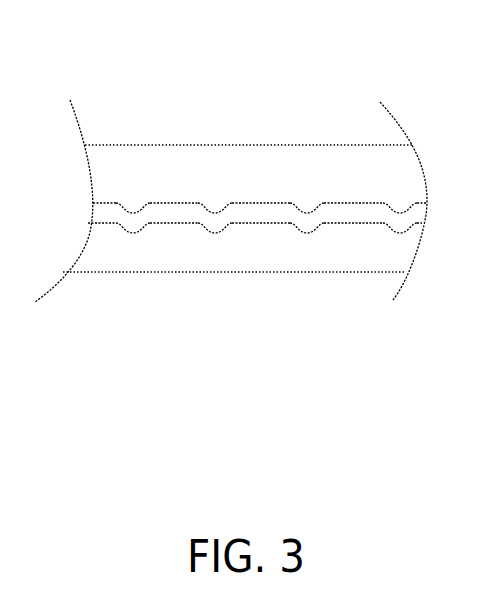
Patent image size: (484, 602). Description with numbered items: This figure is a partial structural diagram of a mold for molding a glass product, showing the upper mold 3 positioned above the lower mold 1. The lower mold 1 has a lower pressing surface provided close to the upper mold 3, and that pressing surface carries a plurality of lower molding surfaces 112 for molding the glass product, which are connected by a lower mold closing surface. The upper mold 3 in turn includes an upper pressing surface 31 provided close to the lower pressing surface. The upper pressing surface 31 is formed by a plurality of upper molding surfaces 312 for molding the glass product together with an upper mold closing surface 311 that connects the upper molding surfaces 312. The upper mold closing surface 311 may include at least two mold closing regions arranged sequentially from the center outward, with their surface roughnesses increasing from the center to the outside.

The lower mold 1 is at (372, 272).
The lower molding surface 112 is at (135, 233).
The upper mold 3 is at (102, 145).
The upper pressing surface 31 is at (362, 57).
The upper molding surface 312 is at (215, 213).
The upper mold closing surface 311 is at (333, 203).